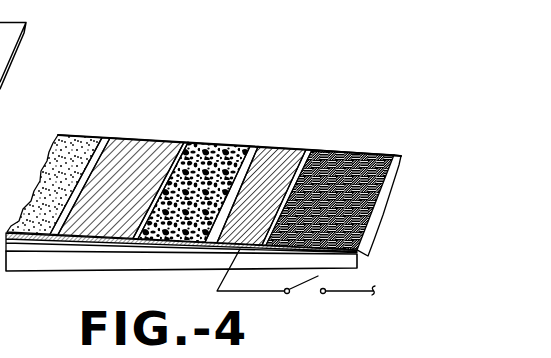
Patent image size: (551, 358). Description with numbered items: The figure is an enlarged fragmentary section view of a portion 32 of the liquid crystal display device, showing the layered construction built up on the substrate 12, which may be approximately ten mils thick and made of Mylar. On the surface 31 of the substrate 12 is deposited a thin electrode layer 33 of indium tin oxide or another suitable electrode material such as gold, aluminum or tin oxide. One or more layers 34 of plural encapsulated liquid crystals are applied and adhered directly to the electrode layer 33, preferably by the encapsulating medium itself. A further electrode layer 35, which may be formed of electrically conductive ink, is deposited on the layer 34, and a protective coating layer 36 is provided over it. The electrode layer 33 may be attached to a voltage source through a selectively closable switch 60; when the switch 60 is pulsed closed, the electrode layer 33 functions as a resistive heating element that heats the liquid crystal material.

The substrate 12 is at (381, 153).
The surface 31 is at (353, 262).
The portion 32 is at (116, 80).
The electrode layer 33 is at (280, 149).
The layer of plural encapsulated liquid crystals 34 is at (218, 144).
The further electrode layer 35 is at (157, 138).
The protective coating layer 36 is at (90, 135).
The selectively closable switch 60 is at (309, 282).